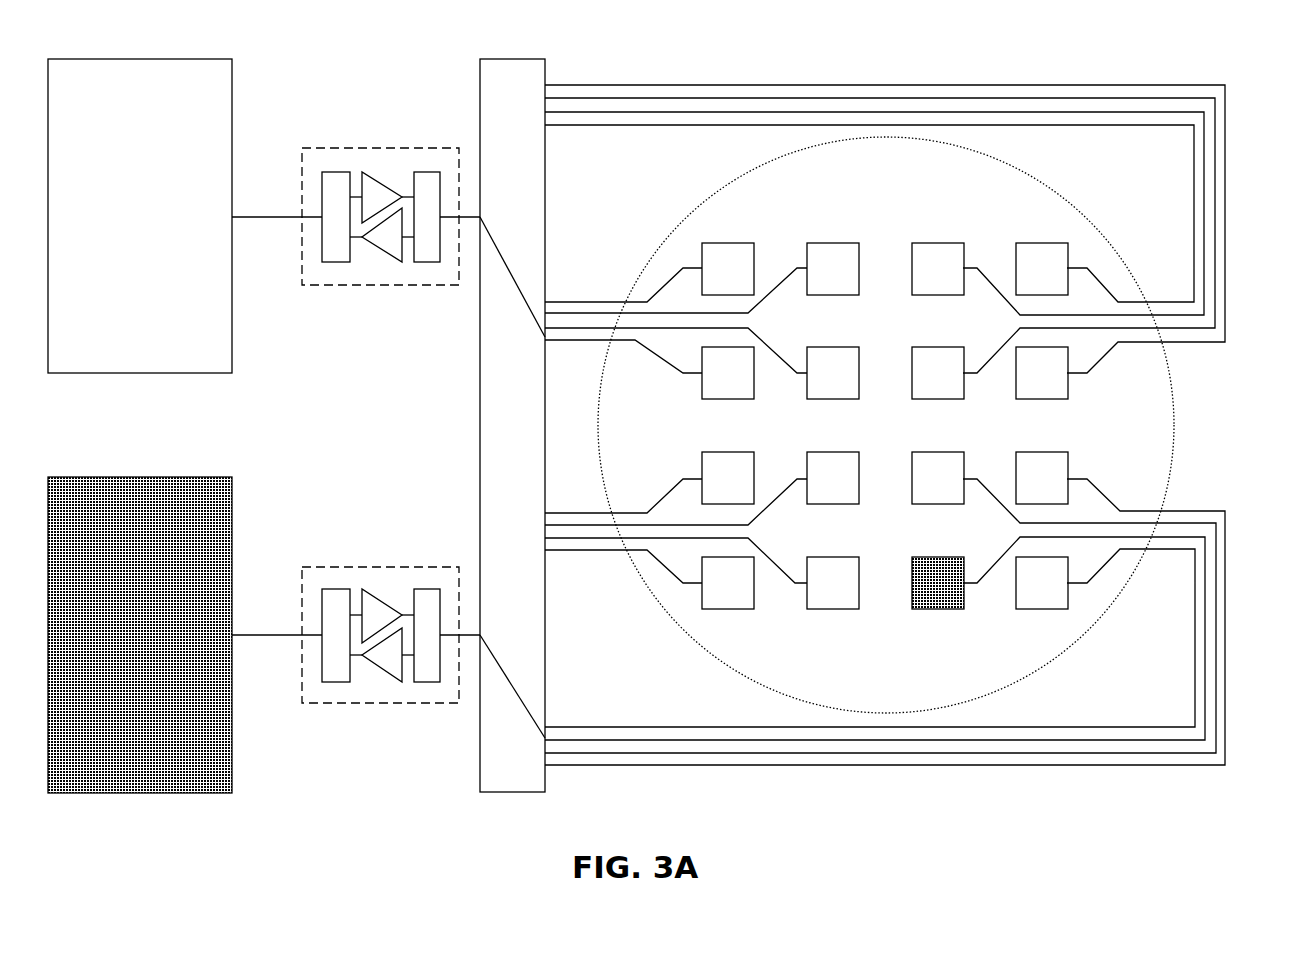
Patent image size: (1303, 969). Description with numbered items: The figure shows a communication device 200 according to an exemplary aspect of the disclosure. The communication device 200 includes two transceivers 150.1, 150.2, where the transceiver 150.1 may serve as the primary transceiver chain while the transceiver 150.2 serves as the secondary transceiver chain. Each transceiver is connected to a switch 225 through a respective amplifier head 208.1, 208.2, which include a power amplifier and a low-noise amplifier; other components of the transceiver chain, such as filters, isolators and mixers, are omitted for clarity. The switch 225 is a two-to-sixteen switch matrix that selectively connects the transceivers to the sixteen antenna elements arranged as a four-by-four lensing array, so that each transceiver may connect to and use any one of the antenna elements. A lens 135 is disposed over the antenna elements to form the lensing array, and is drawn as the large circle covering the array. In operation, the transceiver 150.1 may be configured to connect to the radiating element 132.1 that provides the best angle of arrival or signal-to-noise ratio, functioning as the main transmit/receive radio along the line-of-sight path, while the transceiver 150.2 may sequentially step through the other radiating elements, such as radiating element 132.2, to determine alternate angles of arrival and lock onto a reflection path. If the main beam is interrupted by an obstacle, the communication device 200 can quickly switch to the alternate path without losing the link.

The communication device 200 is at (669, 476).
The transceiver 150.1 is at (185, 216).
The transceiver 150.2 is at (185, 635).
The amplifier head 208.1 is at (380, 287).
The amplifier head 208.2 is at (377, 567).
The switch 225 is at (480, 73).
The lens 135 is at (1173, 423).
The radiating element 132.1 is at (702, 390).
The radiating element 132.2 is at (935, 608).